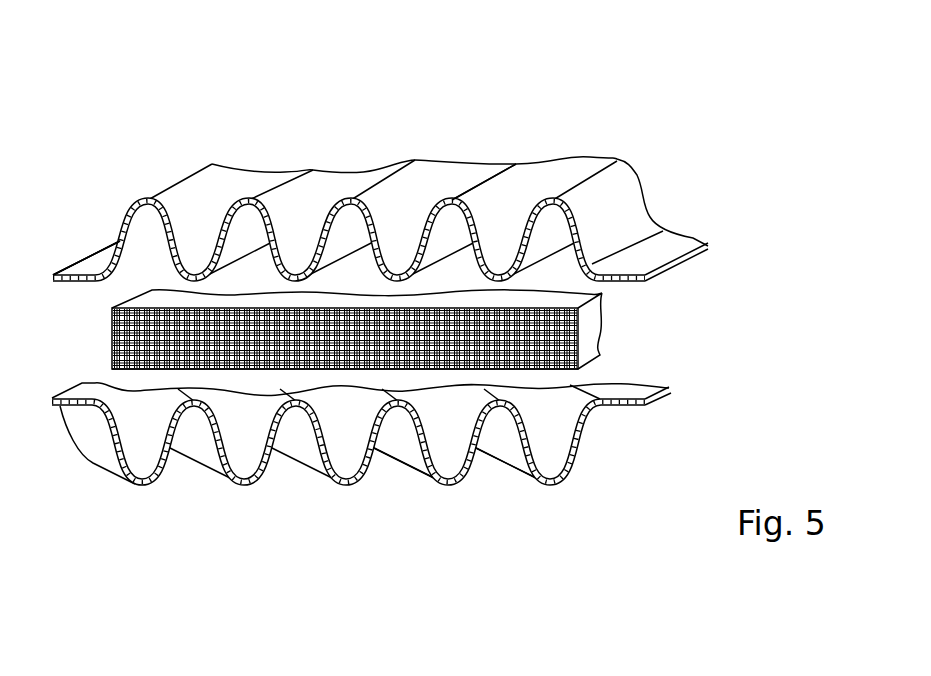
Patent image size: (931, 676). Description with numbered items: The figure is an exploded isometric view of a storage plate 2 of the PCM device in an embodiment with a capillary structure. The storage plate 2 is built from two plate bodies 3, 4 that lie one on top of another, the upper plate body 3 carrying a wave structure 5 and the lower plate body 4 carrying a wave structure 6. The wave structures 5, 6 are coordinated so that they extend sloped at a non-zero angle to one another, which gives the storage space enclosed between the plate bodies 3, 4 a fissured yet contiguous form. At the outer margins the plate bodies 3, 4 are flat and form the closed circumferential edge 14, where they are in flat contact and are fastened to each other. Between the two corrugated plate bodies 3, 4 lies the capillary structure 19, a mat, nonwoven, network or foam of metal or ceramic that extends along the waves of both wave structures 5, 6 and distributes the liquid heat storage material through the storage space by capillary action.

The storage plate 2 is at (699, 146).
The plate body 3 is at (380, 179).
The plate body 4 is at (345, 467).
The wave structure 5 is at (452, 164).
The wave structure 6 is at (310, 462).
The circumferential edge 14 is at (90, 267).
The capillary structure 19 is at (112, 334).